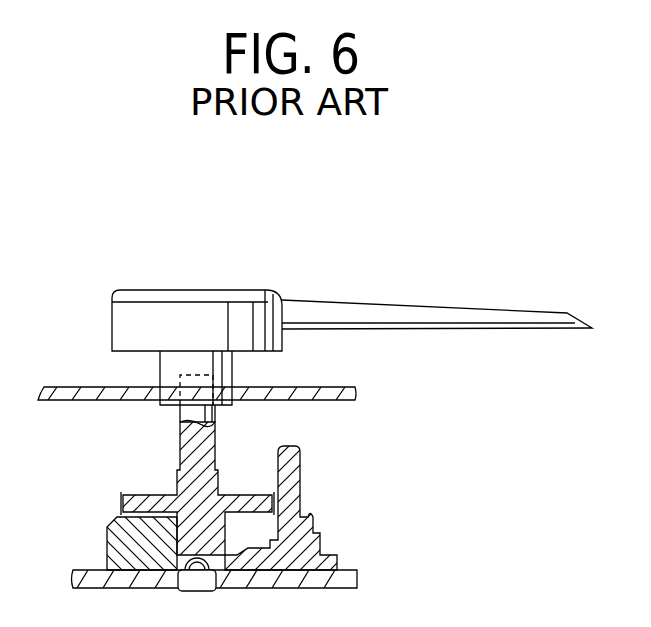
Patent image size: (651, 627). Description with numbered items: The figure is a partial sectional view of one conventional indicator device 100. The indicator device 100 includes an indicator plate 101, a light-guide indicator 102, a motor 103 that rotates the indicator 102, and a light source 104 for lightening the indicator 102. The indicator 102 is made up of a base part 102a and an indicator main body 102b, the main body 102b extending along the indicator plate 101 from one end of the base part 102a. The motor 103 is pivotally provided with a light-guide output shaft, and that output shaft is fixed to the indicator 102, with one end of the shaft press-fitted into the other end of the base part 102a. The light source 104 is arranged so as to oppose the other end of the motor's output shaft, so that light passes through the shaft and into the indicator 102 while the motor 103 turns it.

The indicator device 100 is at (431, 193).
The indicator plate 101 is at (78, 394).
The light-guide indicator 102 is at (335, 302).
The base part 102a is at (483, 321).
The indicator main body 102b is at (203, 327).
The motor 103 is at (290, 473).
The light source 104 is at (160, 562).